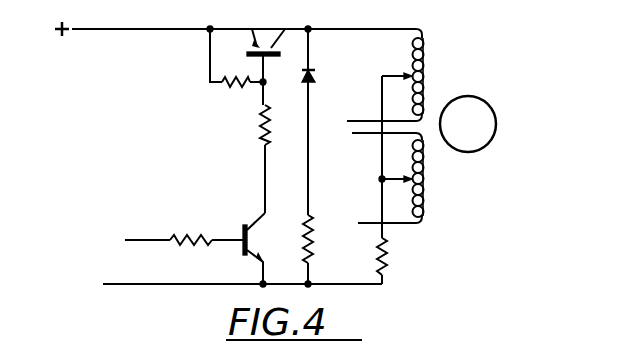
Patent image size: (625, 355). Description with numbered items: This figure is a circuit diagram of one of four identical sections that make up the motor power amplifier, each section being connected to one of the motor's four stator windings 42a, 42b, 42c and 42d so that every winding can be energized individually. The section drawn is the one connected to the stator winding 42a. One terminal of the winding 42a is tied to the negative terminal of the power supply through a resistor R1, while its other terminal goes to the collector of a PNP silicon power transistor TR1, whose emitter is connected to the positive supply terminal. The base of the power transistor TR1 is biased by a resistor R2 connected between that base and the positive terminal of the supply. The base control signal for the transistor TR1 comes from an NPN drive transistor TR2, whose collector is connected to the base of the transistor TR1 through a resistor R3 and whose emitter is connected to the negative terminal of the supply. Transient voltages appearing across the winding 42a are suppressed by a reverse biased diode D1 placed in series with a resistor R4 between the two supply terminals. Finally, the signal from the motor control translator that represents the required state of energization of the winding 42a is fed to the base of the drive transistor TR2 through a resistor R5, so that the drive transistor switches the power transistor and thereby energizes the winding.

The PNP silicon power transistor TR1 is at (263, 49).
The NPN drive transistor TR2 is at (244, 230).
The resistor R1 is at (400, 180).
The resistor R2 is at (231, 69).
The resistor R3 is at (247, 147).
The resistor R4 is at (328, 249).
The resistor R5 is at (206, 228).
The reverse biased diode D1 is at (327, 122).
The stator winding 42a is at (426, 61).
The stator winding 42b is at (426, 98).
The stator winding 42c is at (426, 151).
The stator winding 42d is at (426, 186).